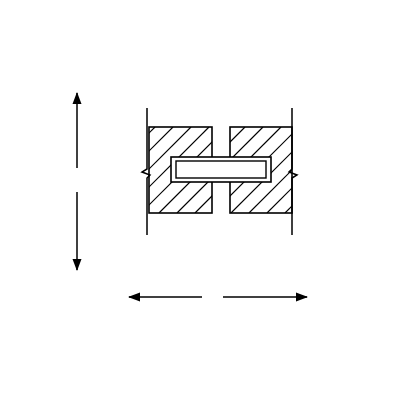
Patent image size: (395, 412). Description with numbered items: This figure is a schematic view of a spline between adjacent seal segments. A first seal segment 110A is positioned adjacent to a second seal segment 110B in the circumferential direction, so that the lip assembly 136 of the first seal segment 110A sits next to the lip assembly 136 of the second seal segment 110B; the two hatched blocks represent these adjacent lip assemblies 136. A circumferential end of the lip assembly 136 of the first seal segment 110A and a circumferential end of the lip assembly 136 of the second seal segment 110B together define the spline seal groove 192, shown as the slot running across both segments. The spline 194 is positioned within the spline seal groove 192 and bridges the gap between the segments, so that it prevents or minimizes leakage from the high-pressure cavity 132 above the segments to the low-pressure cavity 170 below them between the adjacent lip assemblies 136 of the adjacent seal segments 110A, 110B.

The high-pressure cavity 132 is at (206, 48).
The first seal segment 110A is at (170, 133).
The second seal segment 110B is at (264, 133).
The lip assembly 136 is at (214, 135).
The spline 194 is at (219, 170).
The spline seal groove 192 is at (196, 190).
The low-pressure cavity 170 is at (252, 246).